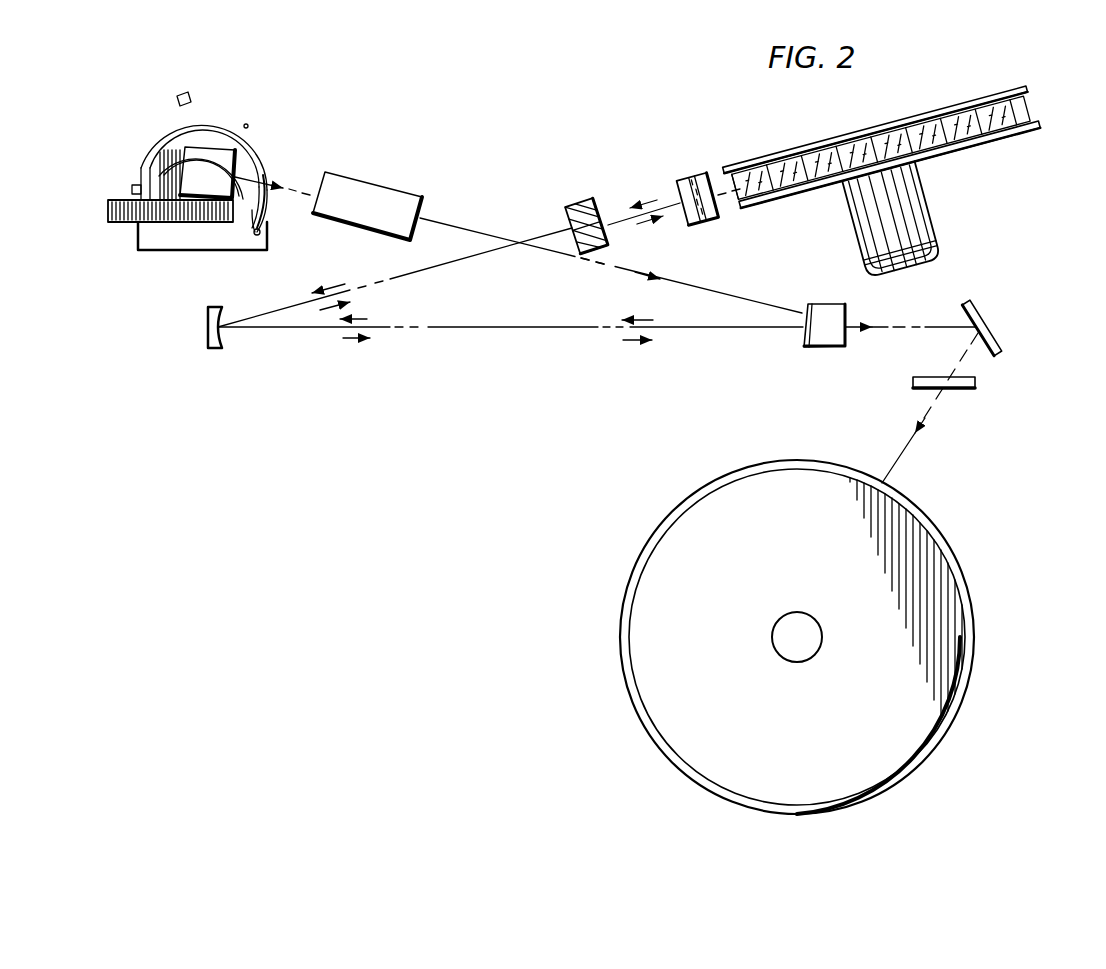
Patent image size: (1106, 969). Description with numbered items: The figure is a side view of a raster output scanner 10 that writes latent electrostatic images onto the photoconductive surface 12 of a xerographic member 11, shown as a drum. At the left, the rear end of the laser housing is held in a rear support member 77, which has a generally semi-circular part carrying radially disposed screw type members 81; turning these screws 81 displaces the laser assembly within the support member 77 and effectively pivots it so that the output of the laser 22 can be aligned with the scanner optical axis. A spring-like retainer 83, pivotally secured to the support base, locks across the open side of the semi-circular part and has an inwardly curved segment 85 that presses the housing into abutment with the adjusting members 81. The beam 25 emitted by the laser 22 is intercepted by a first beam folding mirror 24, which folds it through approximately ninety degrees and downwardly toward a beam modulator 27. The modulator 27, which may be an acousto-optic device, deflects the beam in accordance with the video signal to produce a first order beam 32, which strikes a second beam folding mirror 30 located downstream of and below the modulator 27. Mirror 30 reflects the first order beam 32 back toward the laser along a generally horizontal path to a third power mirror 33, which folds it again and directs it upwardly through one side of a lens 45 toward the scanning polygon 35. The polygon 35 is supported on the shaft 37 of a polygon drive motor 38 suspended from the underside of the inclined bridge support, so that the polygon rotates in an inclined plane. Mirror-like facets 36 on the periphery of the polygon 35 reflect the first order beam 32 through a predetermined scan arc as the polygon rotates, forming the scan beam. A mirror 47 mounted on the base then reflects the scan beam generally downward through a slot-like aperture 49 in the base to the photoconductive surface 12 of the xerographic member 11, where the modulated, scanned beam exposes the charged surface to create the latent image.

The raster output scanner 10 is at (1085, 100).
The xerographic member 11 is at (968, 553).
The photoconductive surface 12 is at (918, 505).
The laser 22 is at (248, 127).
The first beam folding mirror 24 is at (190, 175).
The laser beam 25 is at (290, 183).
The beam modulator 27 is at (415, 197).
The second beam folding mirror 30 is at (818, 276).
The first order beam 32 is at (612, 270).
The third power mirror 33 is at (240, 277).
The scanning polygon 35 is at (790, 132).
The mirror-like facets 36 is at (803, 193).
The shaft 37 is at (897, 122).
The polygon drive motor 38 is at (915, 216).
The lens 45 is at (712, 164).
The mirror 47 is at (990, 318).
The slot-like aperture 49 is at (922, 377).
The rear support member 77 is at (155, 112).
The screw type members 81 is at (183, 93).
The spring-like retainer 83 is at (270, 150).
The inwardly curved segment 85 is at (254, 205).